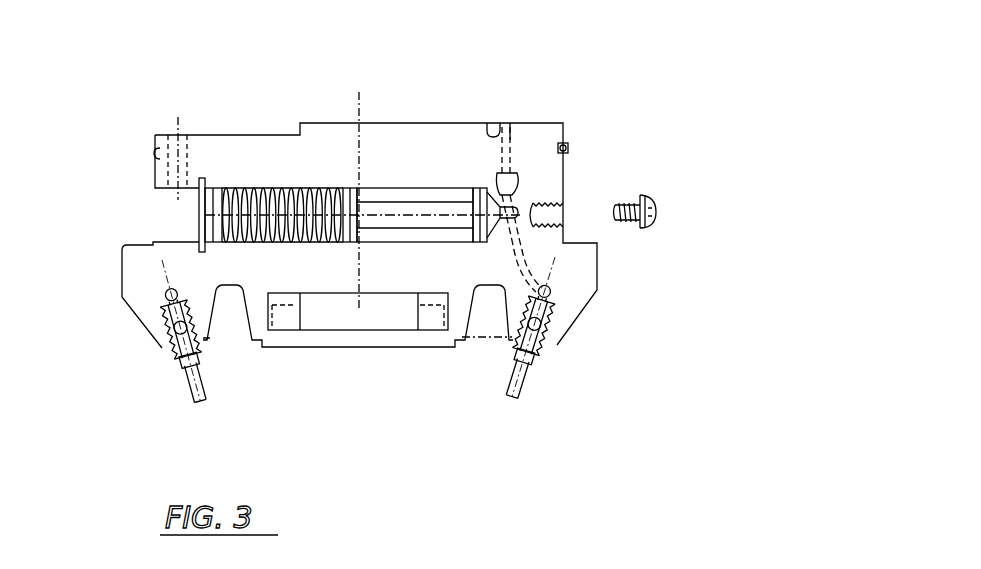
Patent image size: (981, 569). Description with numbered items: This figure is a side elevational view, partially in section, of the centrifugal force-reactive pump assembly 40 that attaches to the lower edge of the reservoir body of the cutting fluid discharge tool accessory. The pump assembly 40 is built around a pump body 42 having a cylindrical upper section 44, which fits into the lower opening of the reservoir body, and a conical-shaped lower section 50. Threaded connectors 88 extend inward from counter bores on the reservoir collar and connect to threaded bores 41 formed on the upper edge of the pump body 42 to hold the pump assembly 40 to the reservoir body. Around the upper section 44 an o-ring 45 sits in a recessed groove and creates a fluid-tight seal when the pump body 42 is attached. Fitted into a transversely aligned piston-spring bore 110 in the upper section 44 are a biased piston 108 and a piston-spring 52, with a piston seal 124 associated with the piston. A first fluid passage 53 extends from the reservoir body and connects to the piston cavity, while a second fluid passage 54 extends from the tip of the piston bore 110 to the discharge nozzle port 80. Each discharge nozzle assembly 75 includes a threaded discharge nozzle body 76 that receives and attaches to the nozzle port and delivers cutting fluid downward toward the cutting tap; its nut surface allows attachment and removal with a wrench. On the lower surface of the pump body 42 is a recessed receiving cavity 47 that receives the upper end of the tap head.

The pump assembly 40 is at (132, 112).
The threaded bore 41 is at (563, 213).
The pump body 42 is at (268, 131).
The cylindrical upper section 44 is at (513, 114).
The o-ring 45 is at (568, 150).
The recessed receiving cavity 47 is at (376, 316).
The conical-shaped lower section 50 is at (132, 318).
The piston-spring 52 is at (201, 218).
The first fluid passage 53 is at (155, 174).
The second fluid passage 54 is at (532, 272).
The discharge nozzle assembly 75 is at (584, 327).
The discharge nozzle body 76 is at (533, 382).
The discharge nozzle port 80 is at (553, 327).
The threaded connector 88 is at (645, 197).
The biased piston 108 is at (452, 220).
The piston-spring bore 110 is at (387, 193).
The piston seal 124 is at (480, 188).